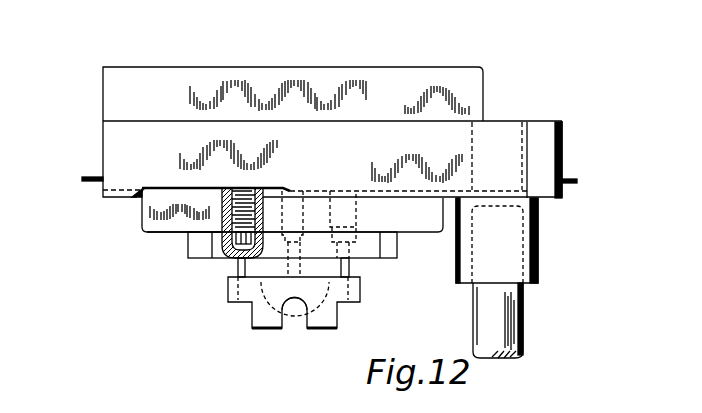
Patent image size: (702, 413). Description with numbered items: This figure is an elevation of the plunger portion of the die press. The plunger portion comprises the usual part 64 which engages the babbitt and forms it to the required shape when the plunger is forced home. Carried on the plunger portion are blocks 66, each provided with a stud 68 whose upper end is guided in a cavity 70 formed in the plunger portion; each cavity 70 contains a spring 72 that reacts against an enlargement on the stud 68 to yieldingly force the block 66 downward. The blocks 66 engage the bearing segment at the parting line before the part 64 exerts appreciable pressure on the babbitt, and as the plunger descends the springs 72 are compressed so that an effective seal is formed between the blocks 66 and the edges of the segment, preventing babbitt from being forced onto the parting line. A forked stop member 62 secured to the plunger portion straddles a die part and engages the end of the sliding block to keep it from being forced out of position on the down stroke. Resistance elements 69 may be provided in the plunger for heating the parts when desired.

The forked stop member 62 is at (265, 322).
The plunger part 64 is at (295, 313).
The blocks 66 is at (233, 302).
The studs 68 is at (240, 262).
The resistance elements 69 is at (86, 177).
The cavities 70 is at (225, 202).
The springs 72 is at (232, 214).